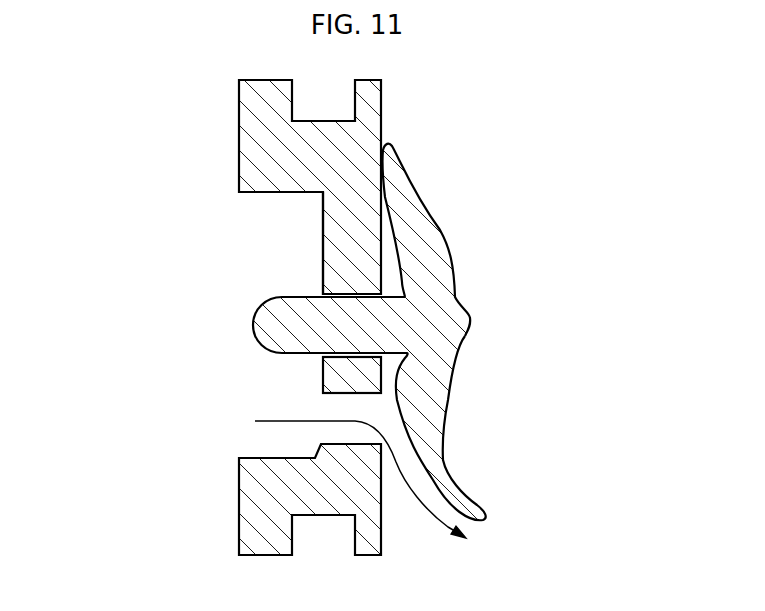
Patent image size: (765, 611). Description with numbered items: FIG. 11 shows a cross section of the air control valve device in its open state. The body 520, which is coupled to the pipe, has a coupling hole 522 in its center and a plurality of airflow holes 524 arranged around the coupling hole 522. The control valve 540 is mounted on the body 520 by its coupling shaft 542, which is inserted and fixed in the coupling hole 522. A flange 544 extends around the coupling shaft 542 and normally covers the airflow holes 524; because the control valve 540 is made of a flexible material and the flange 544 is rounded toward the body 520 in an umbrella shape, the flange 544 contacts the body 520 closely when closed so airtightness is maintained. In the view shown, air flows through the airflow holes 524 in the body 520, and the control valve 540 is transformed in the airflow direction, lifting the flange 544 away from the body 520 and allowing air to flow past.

The body 520 is at (210, 130).
The coupling hole 522 is at (343, 293).
The airflow holes 524 is at (320, 443).
The control valve 540 is at (489, 313).
The coupling shaft 542 is at (270, 327).
The flange 544 is at (438, 258).